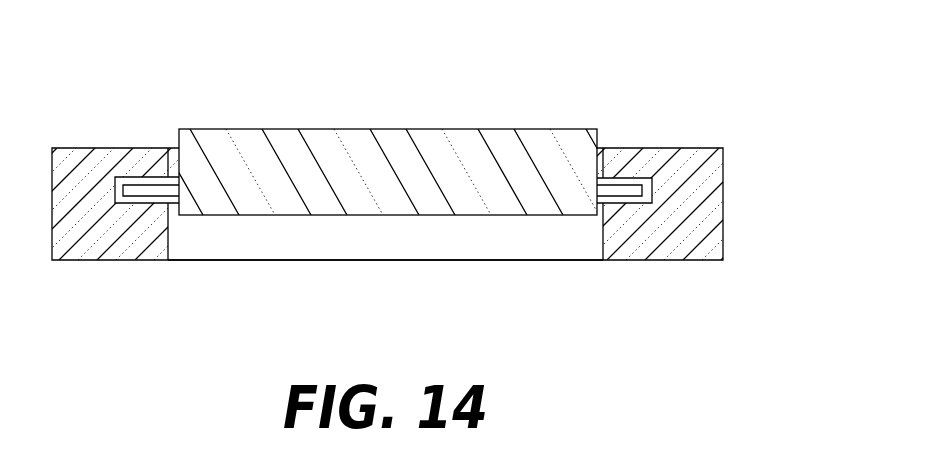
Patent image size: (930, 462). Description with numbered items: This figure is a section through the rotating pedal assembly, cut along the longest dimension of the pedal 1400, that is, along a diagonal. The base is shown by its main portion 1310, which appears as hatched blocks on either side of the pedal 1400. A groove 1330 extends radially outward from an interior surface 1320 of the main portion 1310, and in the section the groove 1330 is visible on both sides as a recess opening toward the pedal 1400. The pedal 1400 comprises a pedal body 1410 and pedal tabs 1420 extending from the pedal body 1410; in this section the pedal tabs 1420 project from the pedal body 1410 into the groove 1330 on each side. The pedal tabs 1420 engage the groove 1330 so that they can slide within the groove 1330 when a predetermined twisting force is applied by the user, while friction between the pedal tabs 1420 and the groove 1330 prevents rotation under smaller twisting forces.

The main portion 1310 is at (718, 215).
The interior surface 1320 is at (510, 240).
The groove 1330 is at (121, 188).
The pedal 1400 is at (545, 150).
The pedal body 1410 is at (357, 150).
The pedal tabs 1420 is at (158, 192).